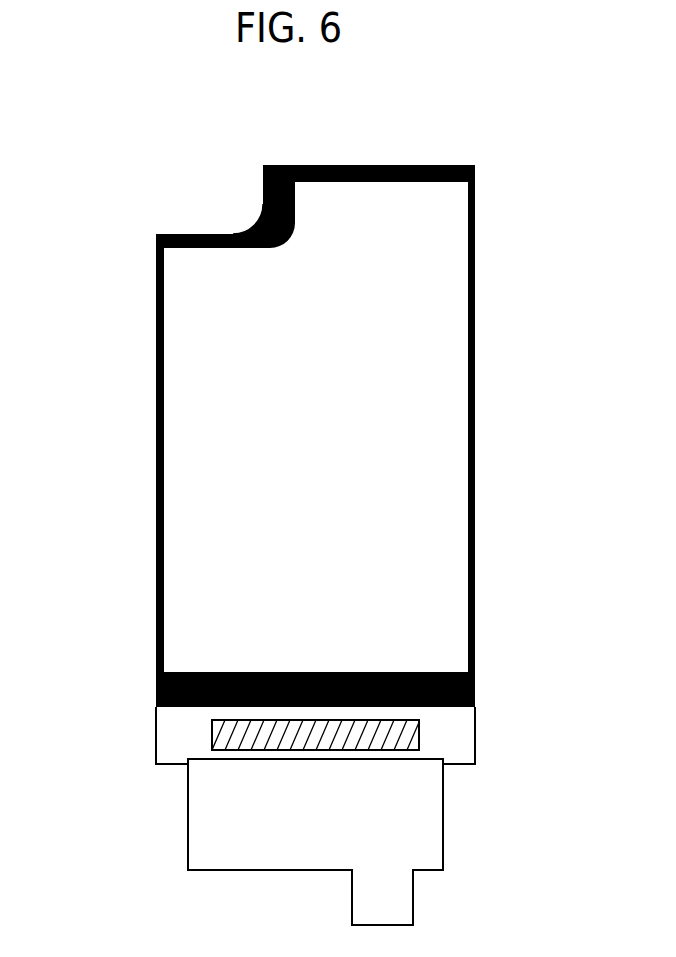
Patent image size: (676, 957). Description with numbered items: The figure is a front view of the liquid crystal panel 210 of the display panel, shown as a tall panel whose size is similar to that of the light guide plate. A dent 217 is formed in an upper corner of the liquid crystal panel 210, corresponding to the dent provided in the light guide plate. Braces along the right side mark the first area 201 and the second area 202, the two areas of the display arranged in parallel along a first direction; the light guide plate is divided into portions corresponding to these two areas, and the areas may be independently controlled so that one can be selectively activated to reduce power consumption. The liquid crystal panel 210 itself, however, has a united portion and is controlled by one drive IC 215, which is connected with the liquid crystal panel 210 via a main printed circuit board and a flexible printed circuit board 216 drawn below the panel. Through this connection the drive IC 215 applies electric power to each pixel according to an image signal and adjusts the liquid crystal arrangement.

The first area 201 is at (486, 246).
The second area 202 is at (486, 165).
The liquid crystal panel 210 is at (188, 500).
The drive IC 215 is at (217, 733).
The flexible printed circuit board 216 is at (218, 827).
The dent 217 is at (207, 198).